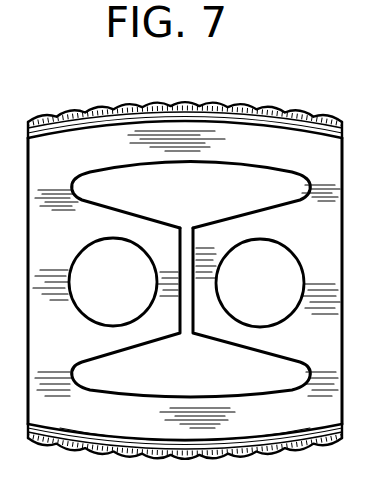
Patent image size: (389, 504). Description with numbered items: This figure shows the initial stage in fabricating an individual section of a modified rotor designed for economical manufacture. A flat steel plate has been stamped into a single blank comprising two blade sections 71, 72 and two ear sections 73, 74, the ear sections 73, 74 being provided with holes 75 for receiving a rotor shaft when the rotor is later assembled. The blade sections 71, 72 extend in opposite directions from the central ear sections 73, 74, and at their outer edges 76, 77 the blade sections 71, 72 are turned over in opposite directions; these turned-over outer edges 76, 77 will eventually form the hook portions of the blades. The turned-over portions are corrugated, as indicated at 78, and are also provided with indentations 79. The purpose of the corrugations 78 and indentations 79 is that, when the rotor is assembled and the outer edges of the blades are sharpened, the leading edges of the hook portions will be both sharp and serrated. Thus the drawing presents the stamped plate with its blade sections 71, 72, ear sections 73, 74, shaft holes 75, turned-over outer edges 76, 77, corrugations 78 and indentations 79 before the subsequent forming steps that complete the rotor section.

The blade section 71 is at (272, 147).
The blade section 72 is at (137, 423).
The ear section 73 is at (157, 237).
The ear section 74 is at (257, 226).
The hole 75 is at (100, 248).
The outer edge 76 is at (248, 108).
The outer edge 77 is at (258, 457).
The corrugation 78 is at (147, 106).
The indentation 79 is at (217, 438).